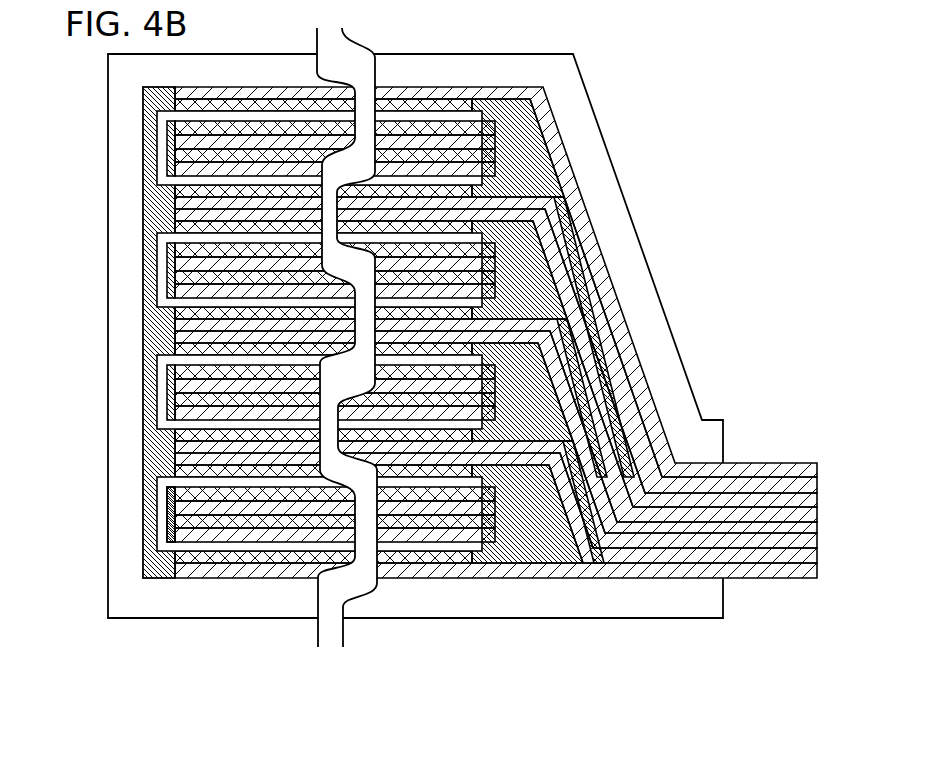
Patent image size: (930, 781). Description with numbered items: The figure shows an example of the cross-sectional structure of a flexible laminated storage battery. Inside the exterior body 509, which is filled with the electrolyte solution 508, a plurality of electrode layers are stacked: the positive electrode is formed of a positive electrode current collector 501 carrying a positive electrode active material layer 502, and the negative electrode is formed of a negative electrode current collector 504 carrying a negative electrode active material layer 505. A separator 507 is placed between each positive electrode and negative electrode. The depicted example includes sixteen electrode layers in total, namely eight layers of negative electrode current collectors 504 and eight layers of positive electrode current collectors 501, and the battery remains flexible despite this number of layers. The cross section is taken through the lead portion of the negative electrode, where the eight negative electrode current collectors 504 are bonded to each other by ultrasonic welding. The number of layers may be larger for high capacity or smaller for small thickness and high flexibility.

The positive electrode current collector 501 is at (253, 505).
The positive electrode active material layer 502 is at (410, 540).
The negative electrode current collector 504 is at (500, 566).
The negative electrode active material layer 505 is at (183, 566).
The separator 507 is at (167, 538).
The electrolyte solution 508 is at (166, 212).
The exterior body 509 is at (118, 123).